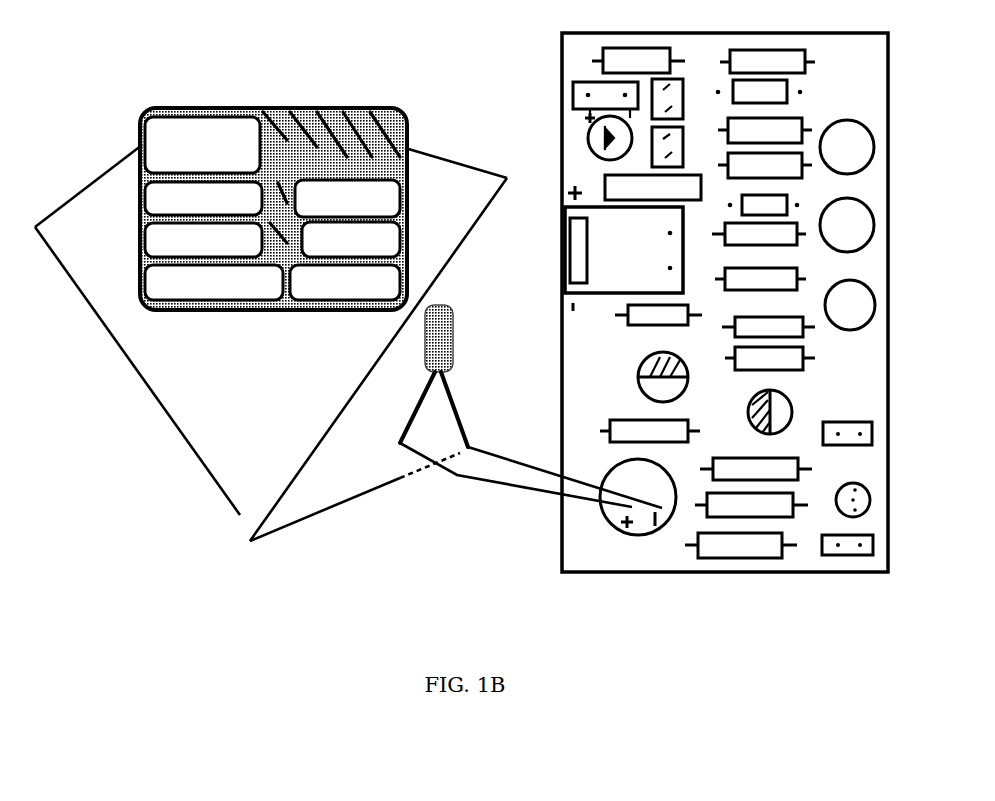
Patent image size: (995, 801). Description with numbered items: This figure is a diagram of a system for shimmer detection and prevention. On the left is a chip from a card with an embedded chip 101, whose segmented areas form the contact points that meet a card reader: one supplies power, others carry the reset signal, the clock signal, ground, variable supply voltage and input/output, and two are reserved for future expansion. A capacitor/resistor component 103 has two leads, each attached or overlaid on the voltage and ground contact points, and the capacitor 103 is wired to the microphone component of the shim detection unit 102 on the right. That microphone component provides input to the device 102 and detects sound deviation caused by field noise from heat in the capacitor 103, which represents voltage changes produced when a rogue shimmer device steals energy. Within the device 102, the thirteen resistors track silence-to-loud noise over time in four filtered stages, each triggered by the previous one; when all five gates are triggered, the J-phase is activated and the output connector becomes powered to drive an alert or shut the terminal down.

The chip from a card with an embedded chip 101 is at (408, 112).
The shim detection unit 102 is at (712, 573).
The capacitor/resistor component 103 is at (423, 343).